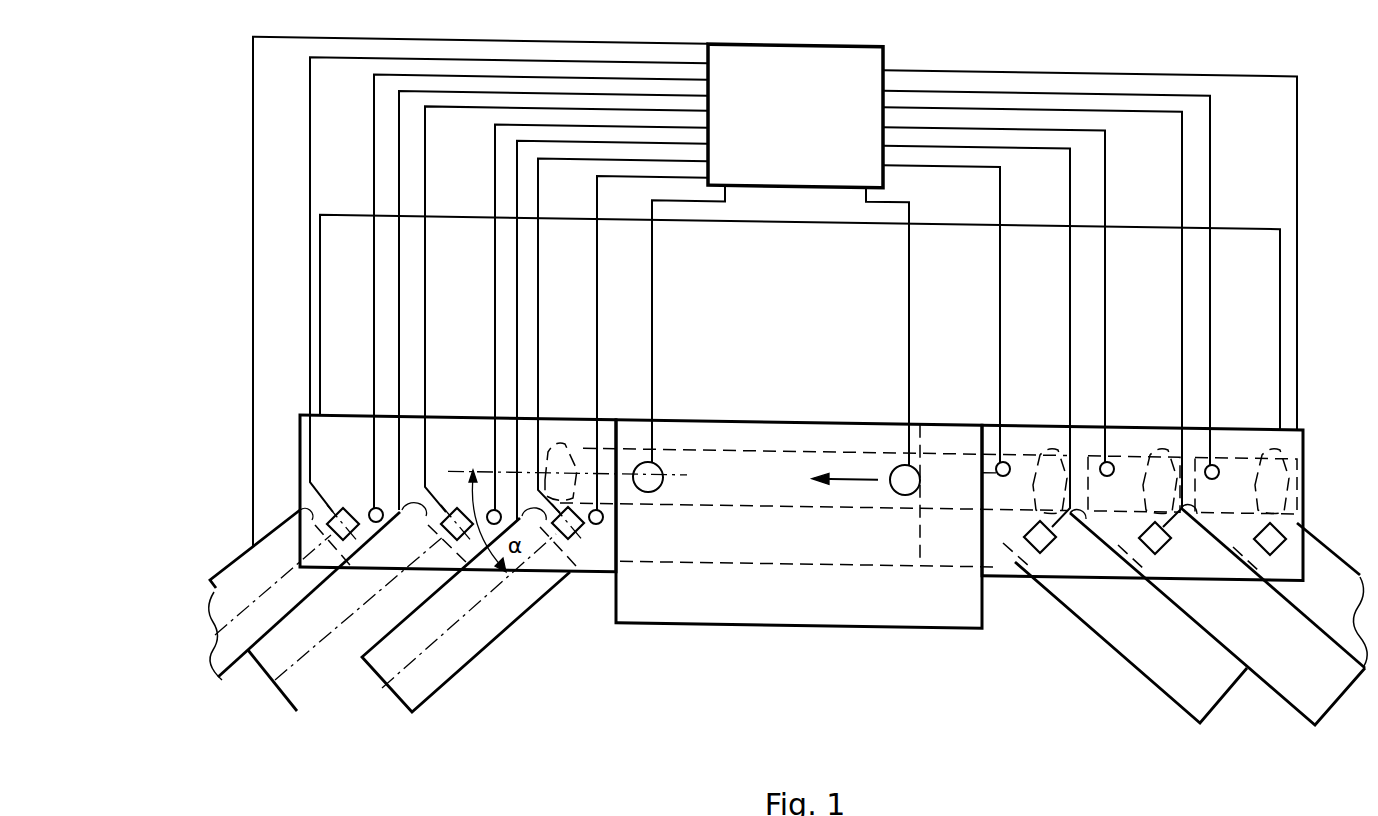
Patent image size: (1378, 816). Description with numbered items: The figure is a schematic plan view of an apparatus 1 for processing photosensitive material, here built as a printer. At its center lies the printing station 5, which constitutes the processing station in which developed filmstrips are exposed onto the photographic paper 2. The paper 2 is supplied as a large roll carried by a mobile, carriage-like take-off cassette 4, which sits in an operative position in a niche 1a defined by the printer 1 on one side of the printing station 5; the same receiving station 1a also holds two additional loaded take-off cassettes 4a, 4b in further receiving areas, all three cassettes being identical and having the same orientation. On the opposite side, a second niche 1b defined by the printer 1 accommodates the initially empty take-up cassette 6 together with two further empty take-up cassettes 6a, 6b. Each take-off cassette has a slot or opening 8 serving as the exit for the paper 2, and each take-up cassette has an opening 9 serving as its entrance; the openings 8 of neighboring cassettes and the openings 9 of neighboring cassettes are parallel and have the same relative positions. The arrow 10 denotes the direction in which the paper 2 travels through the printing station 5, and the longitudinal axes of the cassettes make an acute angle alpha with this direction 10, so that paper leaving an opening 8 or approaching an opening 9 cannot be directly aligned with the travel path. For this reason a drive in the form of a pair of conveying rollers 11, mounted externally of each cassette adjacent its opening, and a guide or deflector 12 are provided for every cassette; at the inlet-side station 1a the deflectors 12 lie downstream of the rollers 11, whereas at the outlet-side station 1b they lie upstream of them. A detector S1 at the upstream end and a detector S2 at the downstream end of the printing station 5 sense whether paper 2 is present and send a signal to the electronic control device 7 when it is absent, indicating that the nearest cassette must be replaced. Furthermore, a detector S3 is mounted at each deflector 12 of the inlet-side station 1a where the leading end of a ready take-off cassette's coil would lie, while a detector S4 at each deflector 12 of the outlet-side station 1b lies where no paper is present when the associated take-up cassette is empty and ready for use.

The apparatus 1 is at (712, 591).
The niche 1a is at (995, 572).
The second niche 1b is at (612, 566).
The photographic paper 2 is at (826, 438).
The take-off cassette 4 is at (1138, 643).
The take-off cassette 4a is at (1303, 695).
The take-off cassette 4b is at (1345, 623).
The printing station 5 is at (789, 531).
The take-up cassette 6 is at (452, 663).
The take-up cassette 6a is at (347, 655).
The take-up cassette 6b is at (243, 660).
The electronic control device 7 is at (807, 153).
The opening 8 is at (1060, 540).
The opening 9 is at (312, 522).
The arrow 10 is at (866, 467).
The conveying rollers 11 is at (315, 517).
The deflector 12 is at (567, 445).
The detector S1 is at (900, 452).
The detector S2 is at (660, 462).
The detector S3 is at (1000, 473).
The detector S4 is at (371, 510).